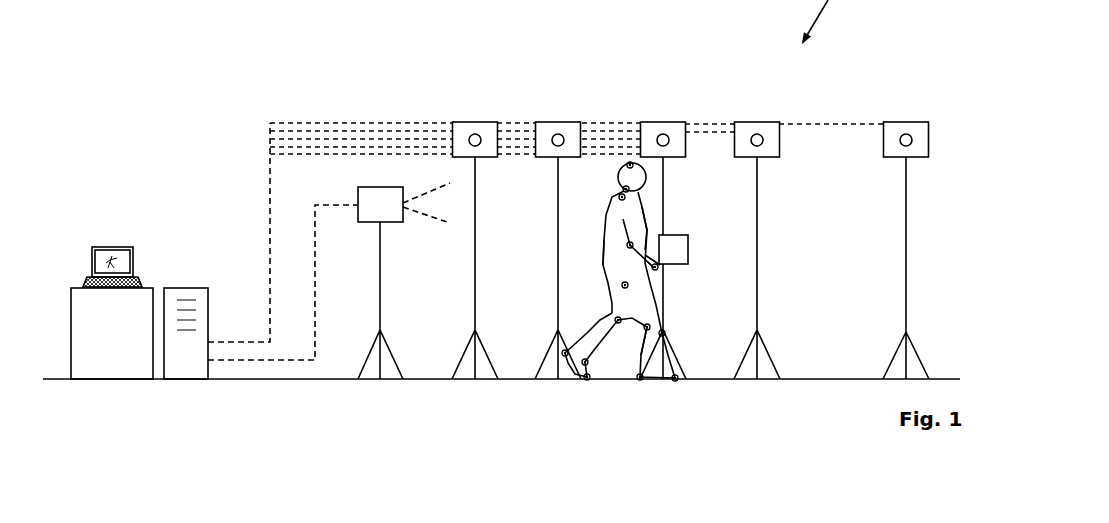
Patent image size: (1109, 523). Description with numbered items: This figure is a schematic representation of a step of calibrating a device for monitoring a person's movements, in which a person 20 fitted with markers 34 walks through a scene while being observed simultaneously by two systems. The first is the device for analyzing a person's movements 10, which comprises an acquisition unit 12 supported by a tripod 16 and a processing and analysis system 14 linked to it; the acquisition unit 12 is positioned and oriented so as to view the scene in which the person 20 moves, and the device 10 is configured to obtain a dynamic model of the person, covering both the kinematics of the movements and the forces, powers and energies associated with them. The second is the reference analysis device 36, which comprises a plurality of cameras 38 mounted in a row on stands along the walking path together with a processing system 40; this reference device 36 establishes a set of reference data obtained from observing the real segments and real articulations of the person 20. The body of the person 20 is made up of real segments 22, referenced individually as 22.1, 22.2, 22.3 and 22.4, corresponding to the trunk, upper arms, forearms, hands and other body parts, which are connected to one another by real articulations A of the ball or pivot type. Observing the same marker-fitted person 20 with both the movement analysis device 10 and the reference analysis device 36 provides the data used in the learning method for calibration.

The device for analyzing a person's movements 10 is at (197, 248).
The acquisition unit 12 is at (378, 187).
The processing and analysis system 14 is at (172, 282).
The tripod 16 is at (381, 322).
The person 20 is at (630, 234).
The real segments 22 is at (650, 328).
The real segment 22.1 is at (643, 217).
The real segment 22.2 is at (662, 248).
The real segment 22.3 is at (662, 266).
The body part (torso) 22.4 is at (606, 227).
The markers 34 is at (625, 189).
The reference analysis device 36 is at (670, 202).
The cameras 38 is at (468, 128).
The processing system 40 is at (190, 283).
The real articulations A is at (602, 304).